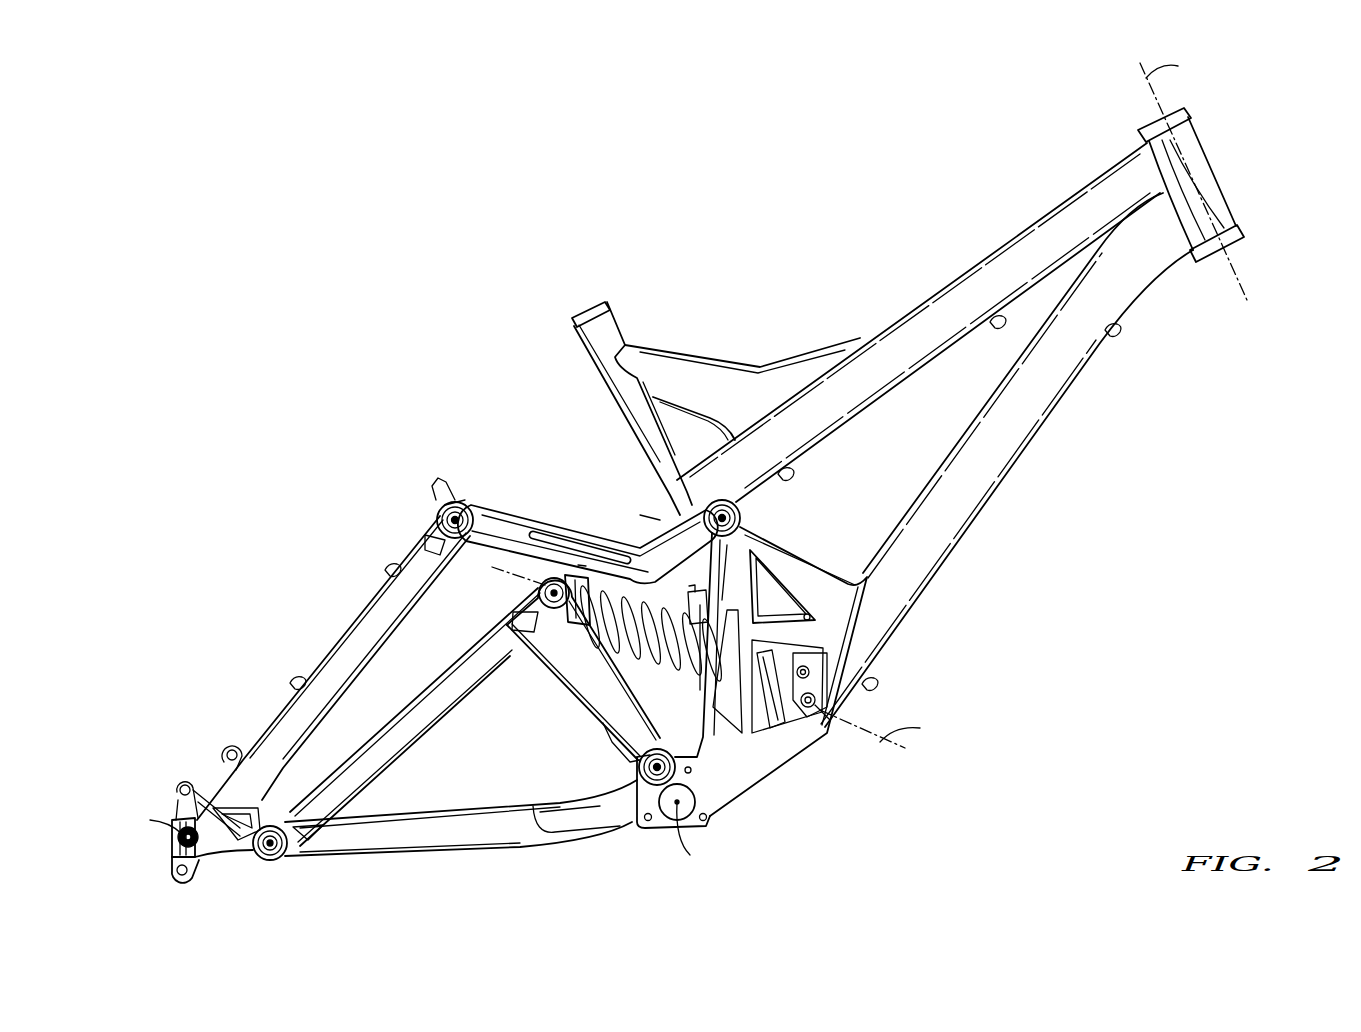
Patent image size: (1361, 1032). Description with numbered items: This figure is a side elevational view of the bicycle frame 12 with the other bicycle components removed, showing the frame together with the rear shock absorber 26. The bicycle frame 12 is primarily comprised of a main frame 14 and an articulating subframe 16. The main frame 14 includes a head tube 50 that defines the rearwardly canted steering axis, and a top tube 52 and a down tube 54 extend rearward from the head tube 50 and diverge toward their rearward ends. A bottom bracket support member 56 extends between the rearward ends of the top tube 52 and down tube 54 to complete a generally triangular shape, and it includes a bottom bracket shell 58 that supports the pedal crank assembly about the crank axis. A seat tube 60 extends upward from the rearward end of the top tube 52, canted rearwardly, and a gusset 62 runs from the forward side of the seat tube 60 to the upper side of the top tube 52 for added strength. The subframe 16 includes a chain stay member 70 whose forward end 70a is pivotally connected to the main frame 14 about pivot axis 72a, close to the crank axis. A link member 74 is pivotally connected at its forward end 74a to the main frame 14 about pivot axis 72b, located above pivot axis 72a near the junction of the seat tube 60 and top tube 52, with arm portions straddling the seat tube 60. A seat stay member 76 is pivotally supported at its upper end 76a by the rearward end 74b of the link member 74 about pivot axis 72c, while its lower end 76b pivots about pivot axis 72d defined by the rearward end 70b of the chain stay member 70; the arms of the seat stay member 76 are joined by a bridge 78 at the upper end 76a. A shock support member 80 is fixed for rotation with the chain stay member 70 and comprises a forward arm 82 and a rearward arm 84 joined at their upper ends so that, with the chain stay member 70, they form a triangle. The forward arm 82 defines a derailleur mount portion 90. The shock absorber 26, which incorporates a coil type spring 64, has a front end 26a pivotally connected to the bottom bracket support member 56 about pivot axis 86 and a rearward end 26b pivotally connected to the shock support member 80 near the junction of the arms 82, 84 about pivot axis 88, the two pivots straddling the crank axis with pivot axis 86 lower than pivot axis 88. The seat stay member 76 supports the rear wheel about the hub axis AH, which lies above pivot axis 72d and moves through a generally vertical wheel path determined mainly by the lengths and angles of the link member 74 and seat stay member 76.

The bicycle frame 12 is at (765, 215).
The main frame 14 is at (1018, 192).
The subframe 16 is at (494, 440).
The rear shock absorber 26 is at (705, 768).
The front end of the shock absorber 26a is at (815, 712).
The rearward end of the shock absorber 26b is at (572, 570).
The head tube 50 is at (1212, 165).
The top tube 52 is at (1096, 170).
The down tube 54 is at (1082, 370).
The bottom bracket support member 56 is at (780, 765).
The bottom bracket shell 58 is at (660, 812).
The seat tube 60 is at (618, 318).
The gusset 62 is at (693, 352).
The coil type spring 64 is at (688, 590).
The chain stay member 70 is at (500, 845).
The forward end of the chain stay member 70a is at (615, 812).
The rearward end of the chain stay member 70b is at (322, 848).
The pivot axis 72a is at (640, 768).
The pivot axis 72b is at (738, 512).
The pivot axis 72c is at (440, 508).
The pivot axis 72d is at (268, 862).
The link member 74 is at (500, 497).
The forward end of the link member 74a is at (650, 512).
The rearward end of the link member 74b is at (470, 498).
The seat stay member 76 is at (345, 630).
The upper end of the seat stay member 76a is at (410, 540).
The lower end of the seat stay member 76b is at (232, 790).
The bridge 78 is at (435, 497).
The shock support member 80 is at (437, 640).
The forward arm 82 is at (585, 688).
The rearward arm 84 is at (362, 772).
The pivot axis 86 is at (822, 705).
The pivot axis 88 is at (553, 608).
The derailleur mount portion 90 is at (615, 755).
The hub axis AH is at (184, 832).